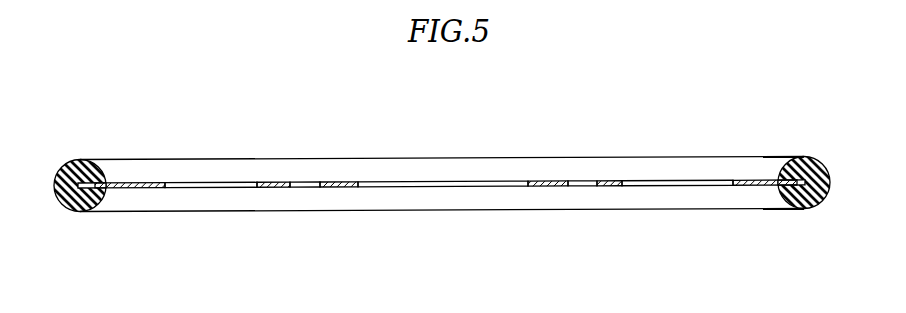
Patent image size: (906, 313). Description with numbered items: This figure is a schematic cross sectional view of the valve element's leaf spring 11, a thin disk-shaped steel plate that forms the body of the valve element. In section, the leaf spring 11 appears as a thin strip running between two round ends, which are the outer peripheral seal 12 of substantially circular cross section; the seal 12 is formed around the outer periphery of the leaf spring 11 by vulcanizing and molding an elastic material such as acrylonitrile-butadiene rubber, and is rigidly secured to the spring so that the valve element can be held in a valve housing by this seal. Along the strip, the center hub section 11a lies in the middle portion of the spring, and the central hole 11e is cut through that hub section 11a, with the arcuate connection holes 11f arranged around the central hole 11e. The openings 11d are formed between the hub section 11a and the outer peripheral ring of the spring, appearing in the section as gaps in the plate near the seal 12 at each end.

The leaf spring 11 is at (706, 192).
The center hub section 11a is at (610, 182).
The openings 11d is at (168, 185).
The central hole 11e is at (460, 188).
The arcuate connection holes 11f is at (303, 185).
The outer peripheral seal 12 is at (800, 162).